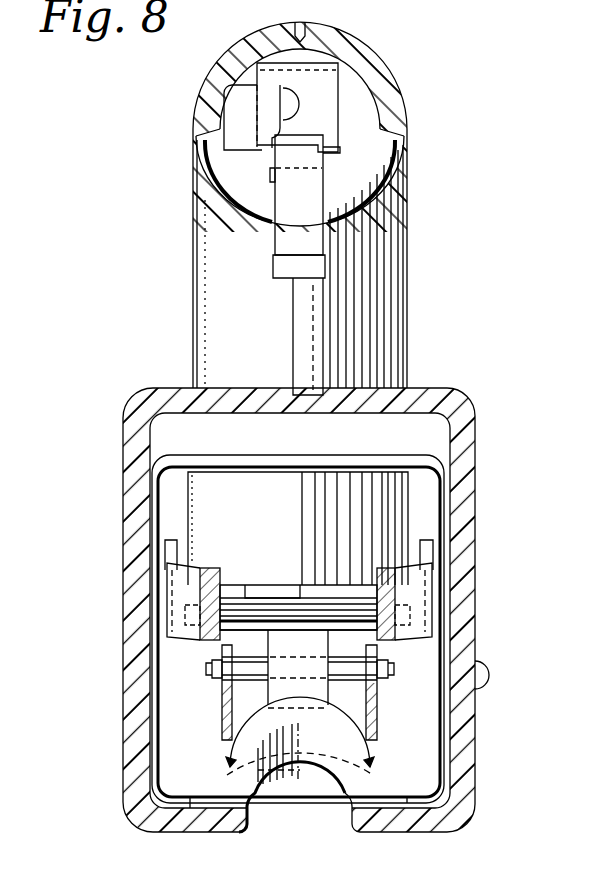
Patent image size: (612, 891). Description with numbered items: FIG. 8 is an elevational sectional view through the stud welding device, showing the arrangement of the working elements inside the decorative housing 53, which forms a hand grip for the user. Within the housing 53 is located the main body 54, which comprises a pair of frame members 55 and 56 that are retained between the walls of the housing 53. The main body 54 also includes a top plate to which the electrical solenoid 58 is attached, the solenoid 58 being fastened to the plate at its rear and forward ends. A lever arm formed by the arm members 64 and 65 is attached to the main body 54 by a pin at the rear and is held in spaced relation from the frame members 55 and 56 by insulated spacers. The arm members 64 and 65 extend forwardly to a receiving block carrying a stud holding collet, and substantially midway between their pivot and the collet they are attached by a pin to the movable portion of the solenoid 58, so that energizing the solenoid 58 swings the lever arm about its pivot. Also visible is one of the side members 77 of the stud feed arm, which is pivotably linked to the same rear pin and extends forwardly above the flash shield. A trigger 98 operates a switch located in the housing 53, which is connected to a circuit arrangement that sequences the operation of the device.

The decorative housing 53 is at (385, 68).
The trigger 98 is at (285, 240).
The main body 54 is at (446, 498).
The frame member 56 is at (152, 498).
The electrical solenoid 58 is at (408, 520).
The frame member 55 is at (445, 600).
The side member 77 is at (212, 568).
The arm member 65 is at (229, 763).
The arm member 64 is at (395, 732).